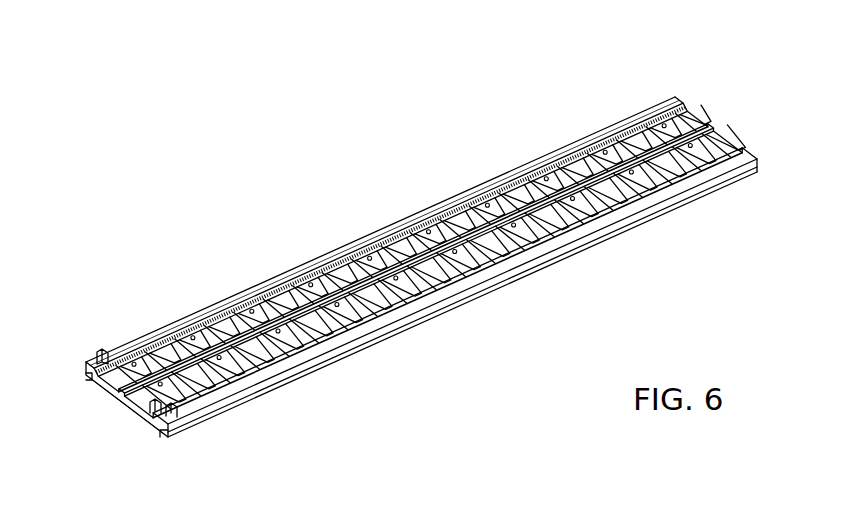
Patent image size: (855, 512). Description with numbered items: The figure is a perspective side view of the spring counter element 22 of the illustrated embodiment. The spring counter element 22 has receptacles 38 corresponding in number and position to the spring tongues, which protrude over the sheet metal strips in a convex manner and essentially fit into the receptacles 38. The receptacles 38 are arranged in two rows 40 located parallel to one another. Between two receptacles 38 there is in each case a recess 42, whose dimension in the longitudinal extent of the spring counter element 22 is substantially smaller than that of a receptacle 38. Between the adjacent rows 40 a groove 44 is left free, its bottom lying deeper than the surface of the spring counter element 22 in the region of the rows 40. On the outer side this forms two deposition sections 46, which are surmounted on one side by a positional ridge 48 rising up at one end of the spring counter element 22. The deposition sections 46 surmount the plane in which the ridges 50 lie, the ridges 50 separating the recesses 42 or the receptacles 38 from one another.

The spring counter element 22 is at (571, 138).
The receptacle 38 is at (378, 238).
The row 40 is at (440, 242).
The recess 42 is at (510, 196).
The groove 44 is at (130, 399).
The deposition section 46 is at (237, 298).
The positional ridge 48 is at (157, 350).
The ridge 50 is at (380, 312).